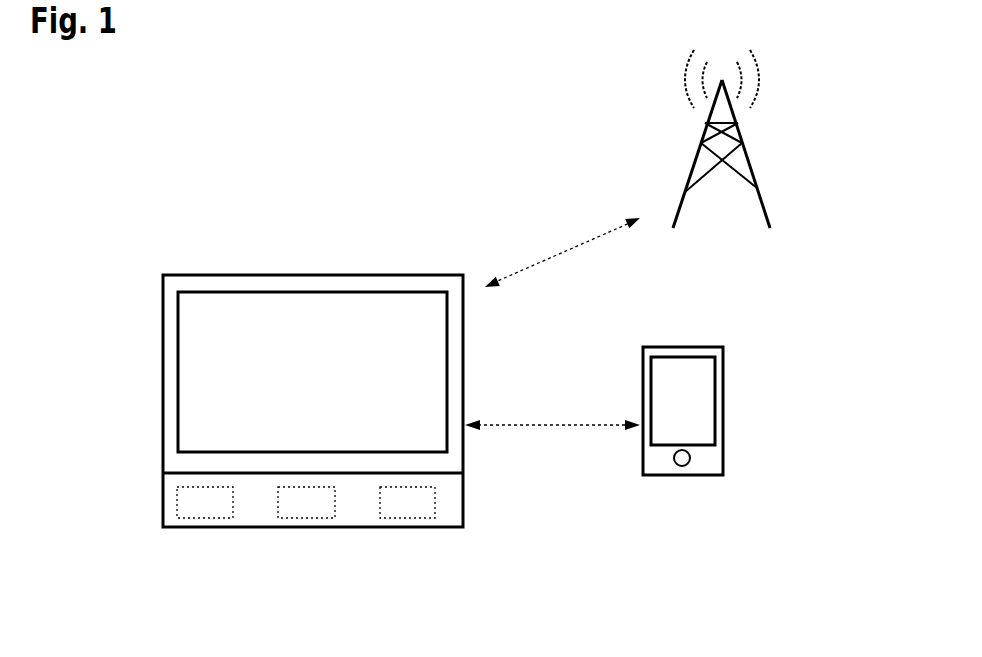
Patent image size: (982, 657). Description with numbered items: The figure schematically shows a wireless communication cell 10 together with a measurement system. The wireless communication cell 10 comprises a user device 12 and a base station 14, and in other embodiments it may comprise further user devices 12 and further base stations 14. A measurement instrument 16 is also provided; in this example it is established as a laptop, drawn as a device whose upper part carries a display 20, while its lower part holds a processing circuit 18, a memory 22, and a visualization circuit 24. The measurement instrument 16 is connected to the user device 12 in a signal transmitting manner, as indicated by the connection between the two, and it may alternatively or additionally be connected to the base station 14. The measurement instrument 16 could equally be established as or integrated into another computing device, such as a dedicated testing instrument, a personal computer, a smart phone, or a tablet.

The wireless communication cell 10 is at (513, 177).
The user device 12 is at (723, 402).
The base station 14 is at (750, 168).
The measurement instrument 16 is at (210, 276).
The processing circuit 18 is at (300, 519).
The display 20 is at (197, 350).
The memory 22 is at (185, 519).
The visualization circuit 24 is at (427, 519).